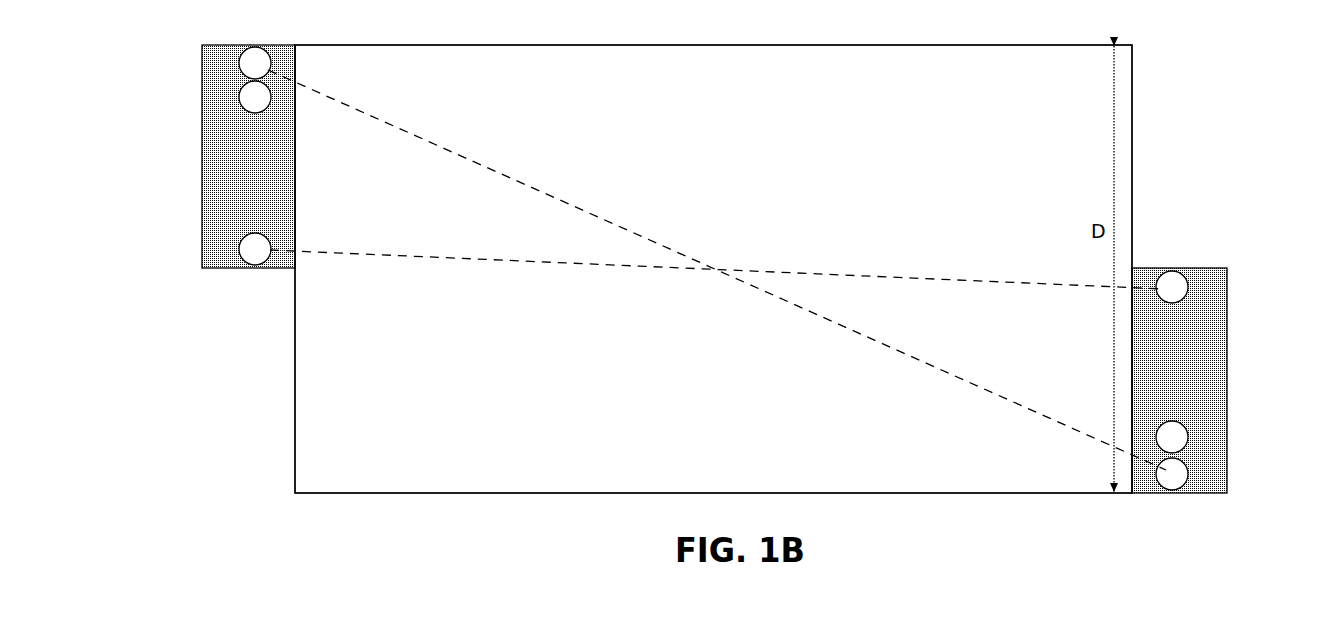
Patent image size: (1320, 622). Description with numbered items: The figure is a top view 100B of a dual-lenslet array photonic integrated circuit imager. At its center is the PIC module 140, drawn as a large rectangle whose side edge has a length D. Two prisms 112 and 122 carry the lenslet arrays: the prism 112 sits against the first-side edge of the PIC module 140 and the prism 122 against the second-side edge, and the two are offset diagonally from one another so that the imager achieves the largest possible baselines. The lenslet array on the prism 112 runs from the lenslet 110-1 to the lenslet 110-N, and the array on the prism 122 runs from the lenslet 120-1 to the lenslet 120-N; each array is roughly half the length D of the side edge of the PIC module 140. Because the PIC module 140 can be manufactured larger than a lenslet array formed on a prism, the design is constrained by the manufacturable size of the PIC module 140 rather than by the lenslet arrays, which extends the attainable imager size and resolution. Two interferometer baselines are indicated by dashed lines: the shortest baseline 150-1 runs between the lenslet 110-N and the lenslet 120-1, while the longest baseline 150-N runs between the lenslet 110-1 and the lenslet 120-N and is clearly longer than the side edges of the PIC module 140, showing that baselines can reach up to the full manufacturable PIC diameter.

The top view 100B is at (160, 58).
The lenslet 110-1 is at (262, 55).
The lenslet 110-N is at (269, 244).
The prism 112 is at (202, 145).
The lenslet 120-1 is at (1172, 272).
The lenslet 120-N is at (1168, 474).
The prism 122 is at (1227, 363).
The PIC module 140 is at (1056, 84).
The shortest baseline 150-1 is at (900, 280).
The longest baseline 150-N is at (556, 196).